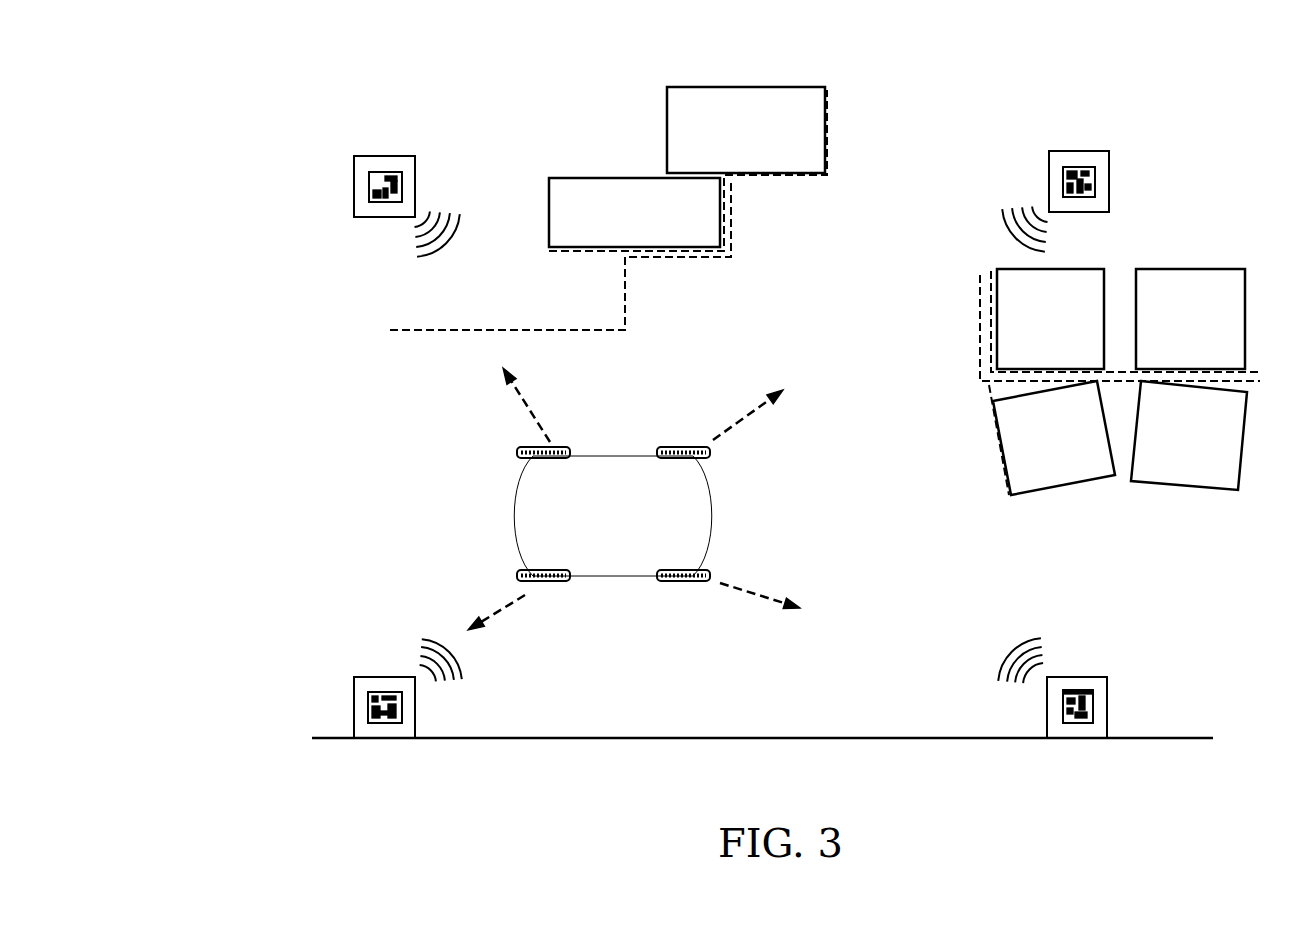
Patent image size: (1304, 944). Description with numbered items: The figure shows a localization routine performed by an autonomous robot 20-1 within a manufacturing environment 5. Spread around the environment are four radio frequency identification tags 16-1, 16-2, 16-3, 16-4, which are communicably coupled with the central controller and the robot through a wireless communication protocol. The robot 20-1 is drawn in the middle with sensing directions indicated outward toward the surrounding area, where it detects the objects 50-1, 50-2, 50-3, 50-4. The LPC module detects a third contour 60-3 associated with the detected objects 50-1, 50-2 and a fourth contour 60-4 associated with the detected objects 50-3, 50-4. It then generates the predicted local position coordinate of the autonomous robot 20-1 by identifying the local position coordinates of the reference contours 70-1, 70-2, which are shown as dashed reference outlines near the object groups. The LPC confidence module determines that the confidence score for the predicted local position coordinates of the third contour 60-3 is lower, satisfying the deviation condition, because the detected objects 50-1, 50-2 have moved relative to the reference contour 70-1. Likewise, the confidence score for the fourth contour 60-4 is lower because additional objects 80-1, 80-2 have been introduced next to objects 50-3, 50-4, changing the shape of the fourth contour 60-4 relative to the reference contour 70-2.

The manufacturing environment 5 is at (285, 103).
The radio frequency identification (RFID) tag 16-1 is at (383, 156).
The radio frequency identification (RFID) tag 16-2 is at (383, 677).
The radio frequency identification (RFID) tag 16-3 is at (1079, 151).
The radio frequency identification (RFID) tag 16-4 is at (1093, 677).
The autonomous robot 20-1 is at (624, 462).
The detected object 50-1 is at (745, 87).
The detected object 50-2 is at (549, 212).
The detected object 50-3 is at (1090, 269).
The detected object 50-4 is at (1177, 269).
The third contour 60-3 is at (575, 252).
The fourth contour 60-4 is at (990, 393).
The reference contour 70-1 is at (433, 331).
The reference contour 70-2 is at (980, 322).
The additional object 80-1 is at (1061, 490).
The additional object 80-2 is at (1186, 490).